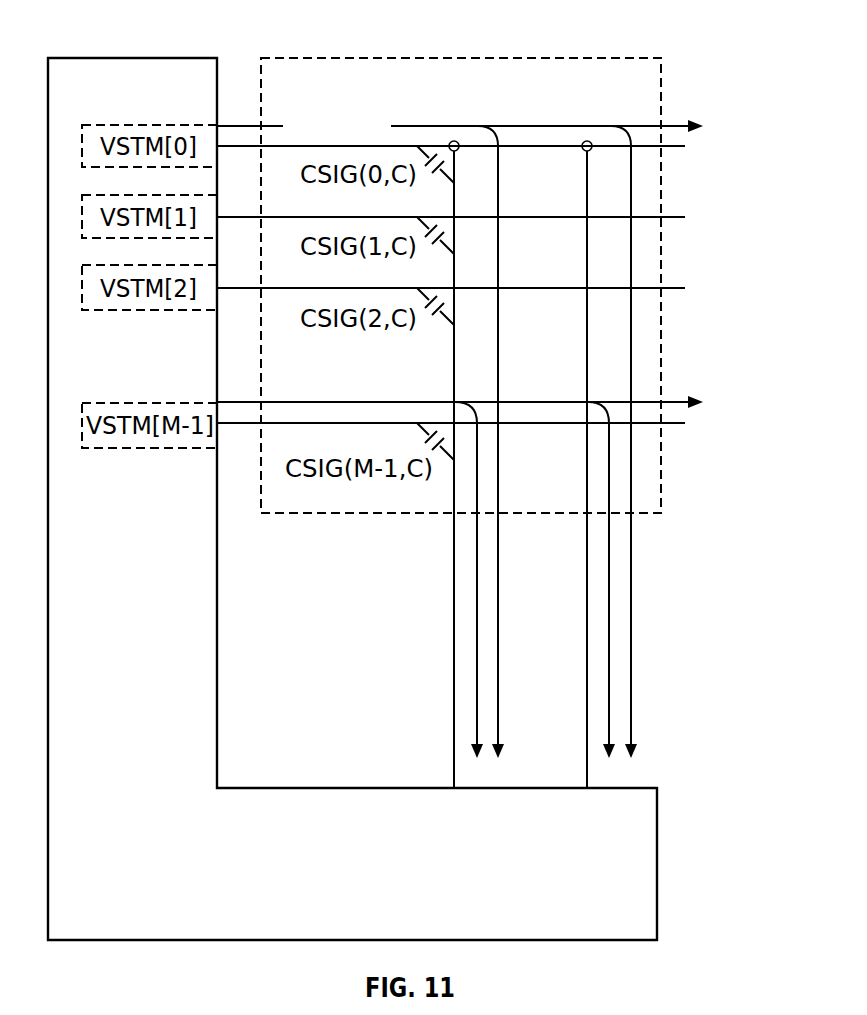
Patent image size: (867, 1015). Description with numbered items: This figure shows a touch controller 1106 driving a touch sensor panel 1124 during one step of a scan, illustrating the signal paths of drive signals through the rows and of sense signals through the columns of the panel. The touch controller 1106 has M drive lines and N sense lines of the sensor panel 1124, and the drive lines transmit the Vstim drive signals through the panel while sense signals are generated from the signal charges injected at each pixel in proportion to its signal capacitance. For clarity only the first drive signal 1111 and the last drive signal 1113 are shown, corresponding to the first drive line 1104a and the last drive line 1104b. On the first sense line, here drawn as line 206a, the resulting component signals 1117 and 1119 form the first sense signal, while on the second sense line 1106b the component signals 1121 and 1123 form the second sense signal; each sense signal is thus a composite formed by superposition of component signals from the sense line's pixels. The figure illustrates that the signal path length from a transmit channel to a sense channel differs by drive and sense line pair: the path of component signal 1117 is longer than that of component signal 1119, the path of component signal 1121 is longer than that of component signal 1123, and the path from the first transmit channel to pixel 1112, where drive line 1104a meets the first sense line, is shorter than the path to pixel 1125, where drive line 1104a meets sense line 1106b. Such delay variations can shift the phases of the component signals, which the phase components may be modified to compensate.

The touch controller 1106 is at (178, 916).
The touch sensor panel 1124 is at (342, 58).
The drive signal Vstim[0] 1111 is at (673, 122).
The drive line 1104a is at (673, 150).
The drive signal Vstim[M-1] 1113 is at (673, 398).
The drive line 1104b is at (673, 426).
The sense line 206a is at (454, 382).
The pixel 1112 is at (454, 141).
The pixel 1125 is at (587, 141).
The sense line 1106b is at (588, 223).
The component signal 1117 is at (498, 629).
The component signal 1119 is at (477, 677).
The component signal 1121 is at (632, 590).
The component signal 1123 is at (609, 670).